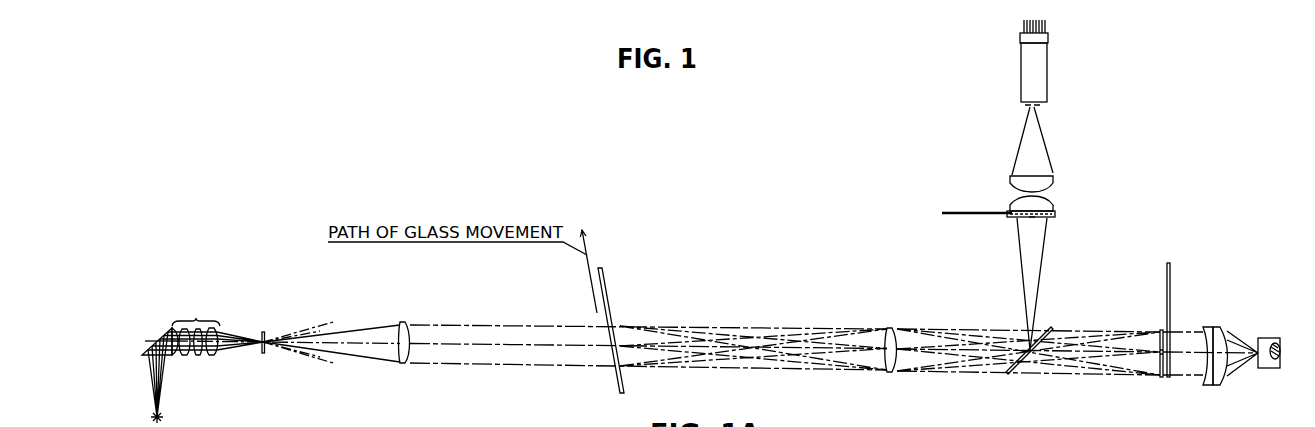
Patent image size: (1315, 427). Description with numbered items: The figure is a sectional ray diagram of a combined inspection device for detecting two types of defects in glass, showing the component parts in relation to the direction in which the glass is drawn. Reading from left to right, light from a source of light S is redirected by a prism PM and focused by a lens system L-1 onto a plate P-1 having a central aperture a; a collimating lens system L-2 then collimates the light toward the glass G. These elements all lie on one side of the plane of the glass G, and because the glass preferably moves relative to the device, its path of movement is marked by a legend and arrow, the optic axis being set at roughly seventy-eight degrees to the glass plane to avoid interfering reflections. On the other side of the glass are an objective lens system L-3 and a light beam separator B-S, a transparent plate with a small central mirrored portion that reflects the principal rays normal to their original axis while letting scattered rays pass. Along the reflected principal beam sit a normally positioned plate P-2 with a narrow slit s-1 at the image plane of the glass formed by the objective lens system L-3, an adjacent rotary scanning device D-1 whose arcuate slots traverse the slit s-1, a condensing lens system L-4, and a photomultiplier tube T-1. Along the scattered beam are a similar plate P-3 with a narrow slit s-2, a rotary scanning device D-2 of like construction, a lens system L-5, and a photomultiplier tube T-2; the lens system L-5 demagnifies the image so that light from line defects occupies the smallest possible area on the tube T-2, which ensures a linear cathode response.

The prism PM is at (157, 329).
The source of light S is at (166, 417).
The lens system L-1 is at (184, 327).
The plate P-1 is at (265, 333).
The central aperture a is at (265, 346).
The collimating lens system L-2 is at (407, 311).
The glass G is at (604, 282).
The objective lens system L-3 is at (890, 327).
The light beam separator B-S is at (1010, 376).
The plate P-3 is at (1160, 378).
The slit s-2 is at (1159, 331).
The rotary scanning device D-2 is at (1171, 273).
The lens system L-5 is at (1213, 328).
The photomultiplier tube T-2 is at (1263, 338).
The photomultiplier tube T-1 is at (1021, 67).
The condensing lens system L-4 is at (1054, 194).
The rotary scanning device D-1 is at (960, 212).
The plate P-2 is at (1057, 217).
The slit s-1 is at (1049, 219).